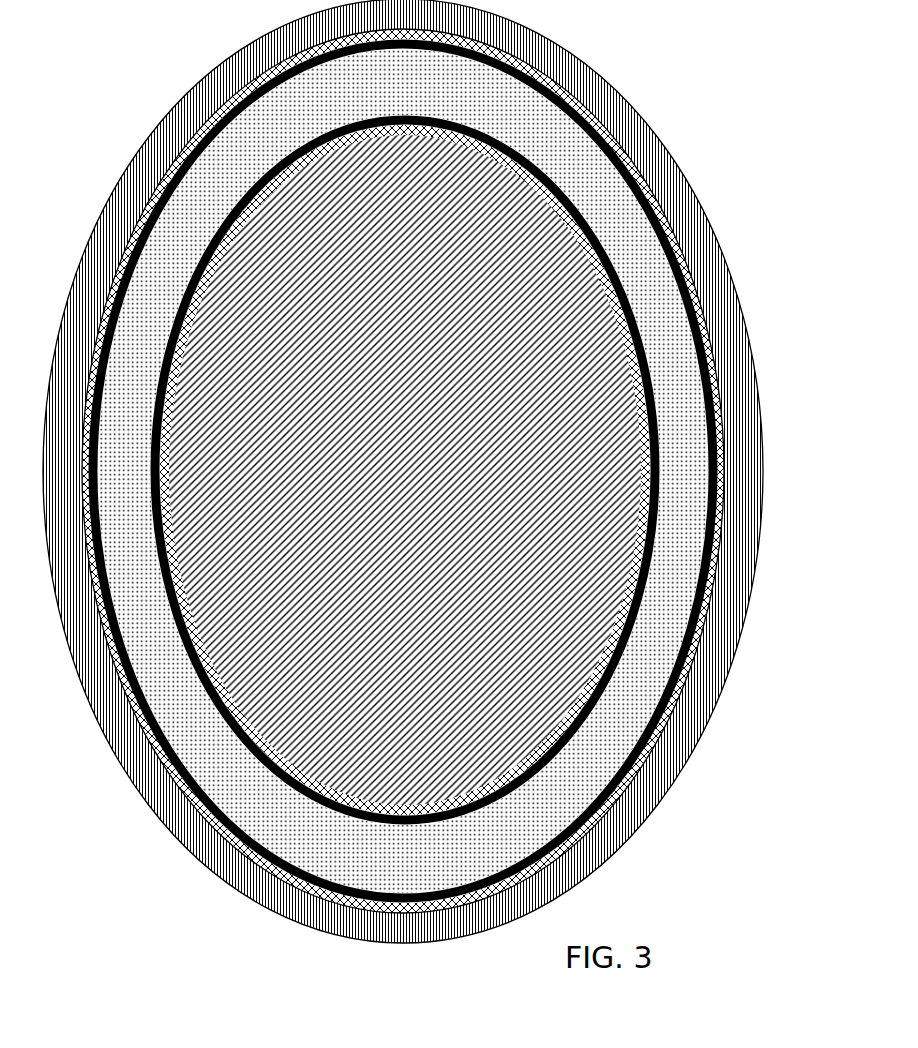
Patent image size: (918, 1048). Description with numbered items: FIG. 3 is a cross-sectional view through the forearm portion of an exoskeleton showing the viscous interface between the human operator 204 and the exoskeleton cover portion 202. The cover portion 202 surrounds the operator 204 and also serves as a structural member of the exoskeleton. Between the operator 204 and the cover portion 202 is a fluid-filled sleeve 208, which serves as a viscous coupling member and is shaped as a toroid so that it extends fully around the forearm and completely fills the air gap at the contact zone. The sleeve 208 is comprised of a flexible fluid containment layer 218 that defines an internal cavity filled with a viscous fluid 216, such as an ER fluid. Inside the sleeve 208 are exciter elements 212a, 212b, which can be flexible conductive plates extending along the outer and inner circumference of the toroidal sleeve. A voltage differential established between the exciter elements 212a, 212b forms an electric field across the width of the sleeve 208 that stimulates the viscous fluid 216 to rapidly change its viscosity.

The cover portion 202 is at (130, 182).
The human operator 204 is at (410, 494).
The fluid-filled sleeve 208 is at (680, 224).
The exciter element 212a is at (432, 47).
The exciter element 212b is at (612, 303).
The viscous fluid 216 is at (593, 175).
The fluid containment layer 218 is at (610, 140).